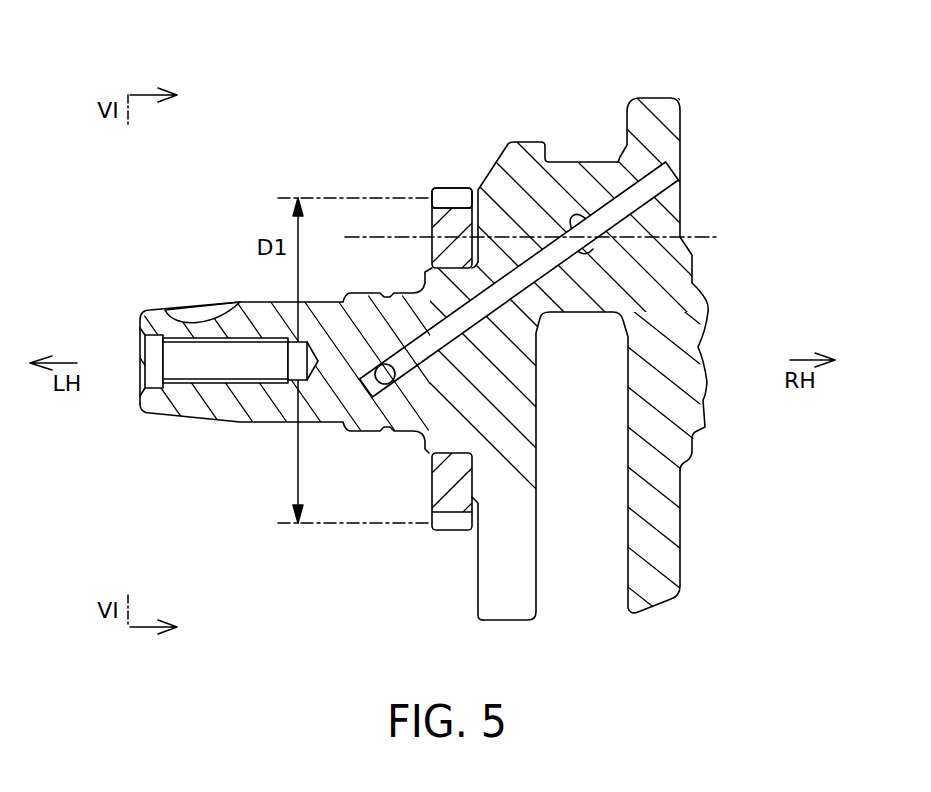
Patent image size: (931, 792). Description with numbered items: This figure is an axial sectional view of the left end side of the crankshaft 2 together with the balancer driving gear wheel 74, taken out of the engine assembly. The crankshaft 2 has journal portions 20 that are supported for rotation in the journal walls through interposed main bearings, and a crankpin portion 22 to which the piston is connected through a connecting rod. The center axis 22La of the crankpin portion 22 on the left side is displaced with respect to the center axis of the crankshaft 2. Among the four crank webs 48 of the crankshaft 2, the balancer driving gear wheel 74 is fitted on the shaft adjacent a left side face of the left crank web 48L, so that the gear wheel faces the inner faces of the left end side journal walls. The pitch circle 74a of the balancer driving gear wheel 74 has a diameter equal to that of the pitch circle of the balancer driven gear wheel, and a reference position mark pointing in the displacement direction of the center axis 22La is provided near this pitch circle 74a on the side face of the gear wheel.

The crankshaft 2 is at (697, 310).
The journal portion 20 is at (365, 432).
The crankpin portion 22 is at (597, 160).
The center axis of the crankpin portion 22La is at (383, 237).
The crank web 48 is at (683, 565).
The left crank web 48L is at (478, 573).
The balancer driving gear wheel 74 is at (464, 190).
The pitch circle of the balancer driving gear wheel 74a is at (449, 188).